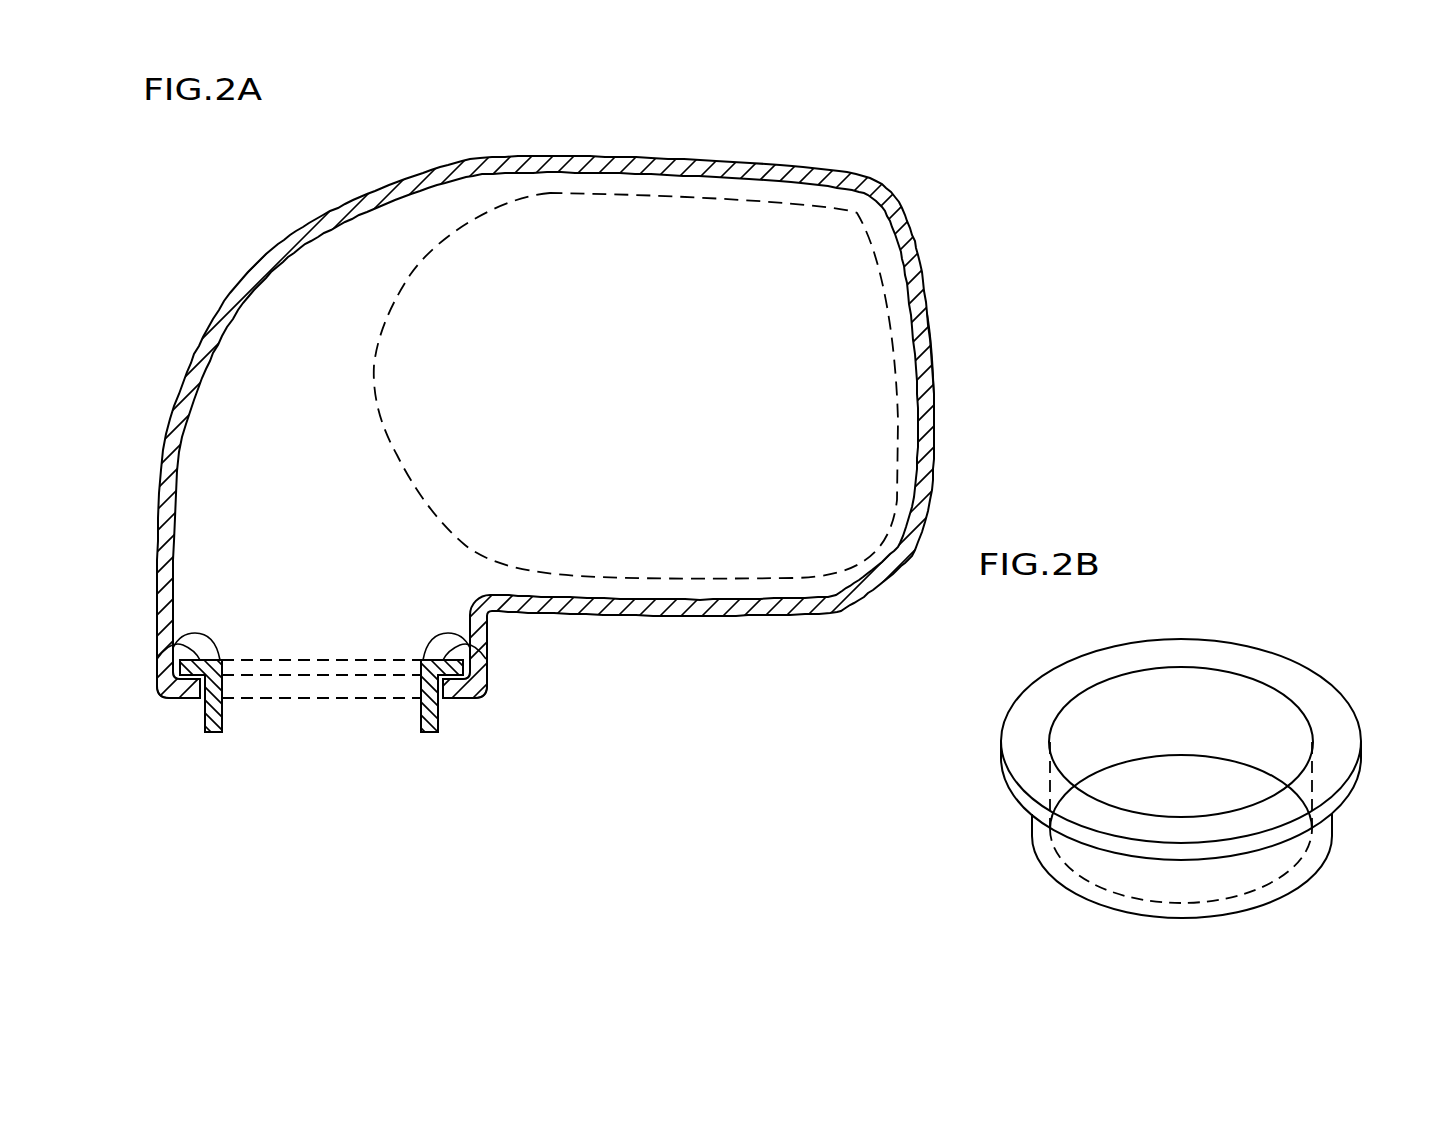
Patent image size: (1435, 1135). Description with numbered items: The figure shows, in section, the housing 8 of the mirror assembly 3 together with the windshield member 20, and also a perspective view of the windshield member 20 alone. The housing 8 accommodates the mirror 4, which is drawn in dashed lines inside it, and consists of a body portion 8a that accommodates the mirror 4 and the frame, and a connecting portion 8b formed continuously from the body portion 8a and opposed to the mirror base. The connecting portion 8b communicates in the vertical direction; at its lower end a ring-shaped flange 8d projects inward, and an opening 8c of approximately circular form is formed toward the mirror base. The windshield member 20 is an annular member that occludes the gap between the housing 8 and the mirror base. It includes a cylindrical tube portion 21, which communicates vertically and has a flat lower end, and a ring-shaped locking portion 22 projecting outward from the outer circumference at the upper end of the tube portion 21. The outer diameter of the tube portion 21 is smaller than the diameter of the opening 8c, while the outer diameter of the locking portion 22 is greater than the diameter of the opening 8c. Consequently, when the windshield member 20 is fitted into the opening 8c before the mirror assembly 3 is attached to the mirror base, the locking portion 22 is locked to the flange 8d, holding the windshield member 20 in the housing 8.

In FIG. 2A, the mirror assembly 3 is at (913, 198).
In FIG. 2A, the mirror 4 is at (855, 383).
In FIG. 2A, the housing 8 is at (918, 300).
In FIG. 2A, the body portion 8a is at (939, 467).
In FIG. 2A, the connecting portion 8b is at (489, 641).
In FIG. 2A, the opening 8c is at (173, 650).
In FIG. 2A, the flange 8d is at (175, 700).
In FIG. 2A, the windshield member 20 is at (412, 710).
In FIG. 2B, the windshield member 20 is at (1227, 630).
In FIG. 2A, the tube portion 21 is at (423, 735).
In FIG. 2B, the tube portion 21 is at (1320, 837).
In FIG. 2A, the locking portion 22 is at (178, 652).
In FIG. 2B, the locking portion 22 is at (1323, 708).